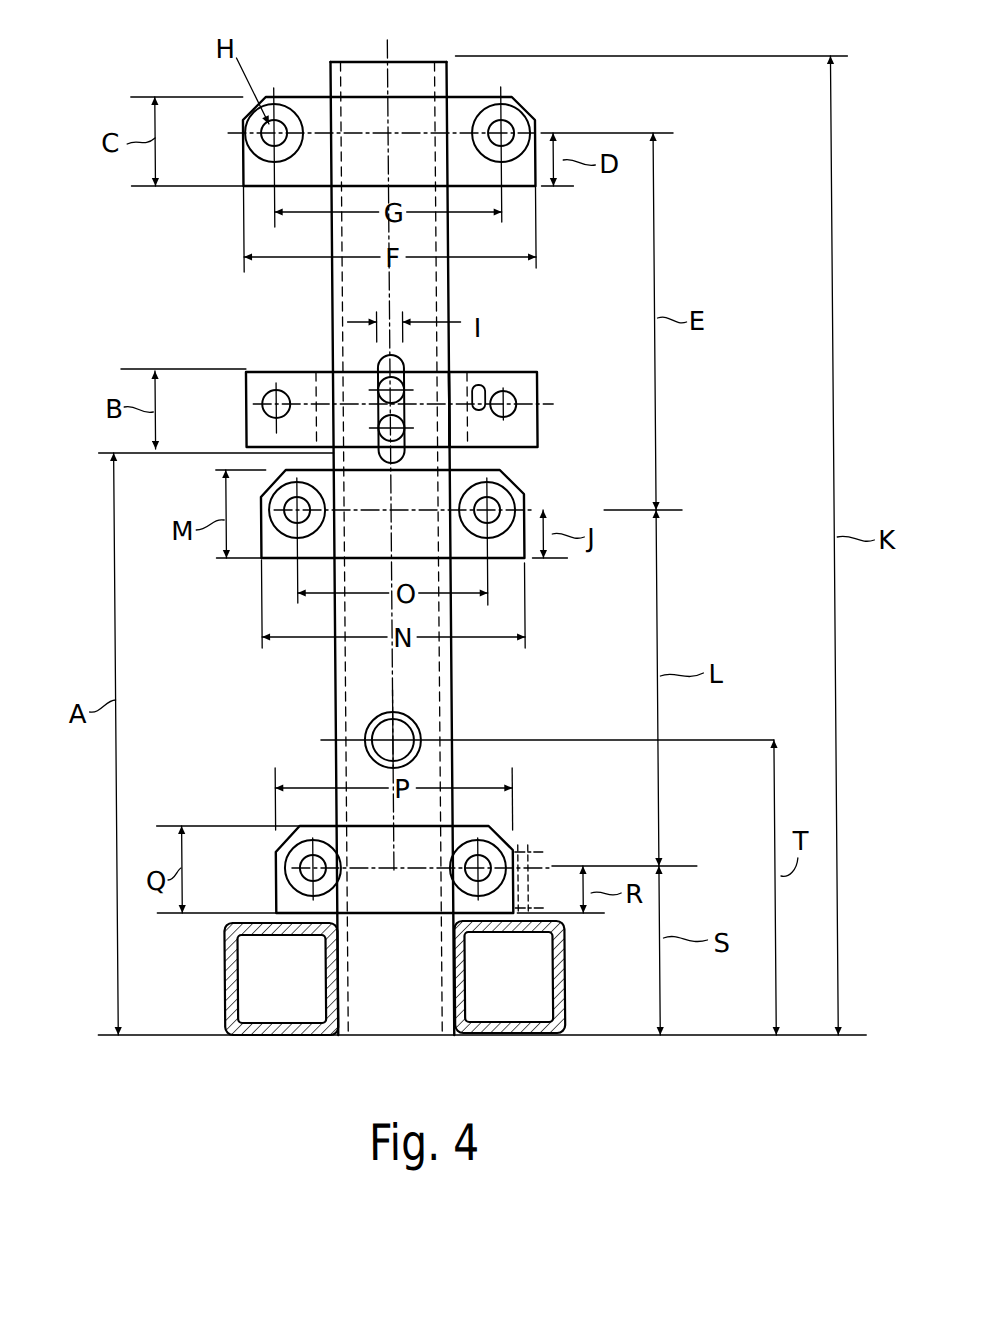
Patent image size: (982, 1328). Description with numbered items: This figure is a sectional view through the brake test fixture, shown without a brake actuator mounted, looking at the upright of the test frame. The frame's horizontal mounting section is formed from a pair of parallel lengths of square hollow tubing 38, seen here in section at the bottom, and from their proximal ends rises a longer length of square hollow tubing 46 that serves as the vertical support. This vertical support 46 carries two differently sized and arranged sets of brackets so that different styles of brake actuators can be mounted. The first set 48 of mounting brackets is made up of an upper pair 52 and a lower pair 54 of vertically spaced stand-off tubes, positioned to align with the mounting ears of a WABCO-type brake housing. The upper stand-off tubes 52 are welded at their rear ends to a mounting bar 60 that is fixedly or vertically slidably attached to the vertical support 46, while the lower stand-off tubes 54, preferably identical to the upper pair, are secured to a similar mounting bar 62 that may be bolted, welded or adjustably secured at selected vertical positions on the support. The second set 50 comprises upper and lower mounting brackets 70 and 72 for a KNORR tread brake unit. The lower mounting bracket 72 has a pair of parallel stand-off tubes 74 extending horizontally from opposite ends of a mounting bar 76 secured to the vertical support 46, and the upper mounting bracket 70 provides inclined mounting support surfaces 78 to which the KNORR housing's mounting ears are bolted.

The square hollow tubing 38 is at (473, 1035).
The vertical support tubing 46 is at (436, 688).
The first set of mounting brackets 48 is at (238, 194).
The second set of mounting brackets 50 is at (293, 371).
The upper pair of stand-off tubes 52 is at (520, 118).
The lower pair of stand-off tubes 54 is at (500, 528).
The mounting bar 60 is at (462, 110).
The mounting bar 62 is at (280, 548).
The upper mounting bracket 70 is at (508, 378).
The lower mounting bracket 72 is at (418, 908).
The stand-off tubes 74 is at (503, 848).
The mounting bar 76 is at (402, 876).
The inclined mounting support surfaces 78 is at (268, 425).